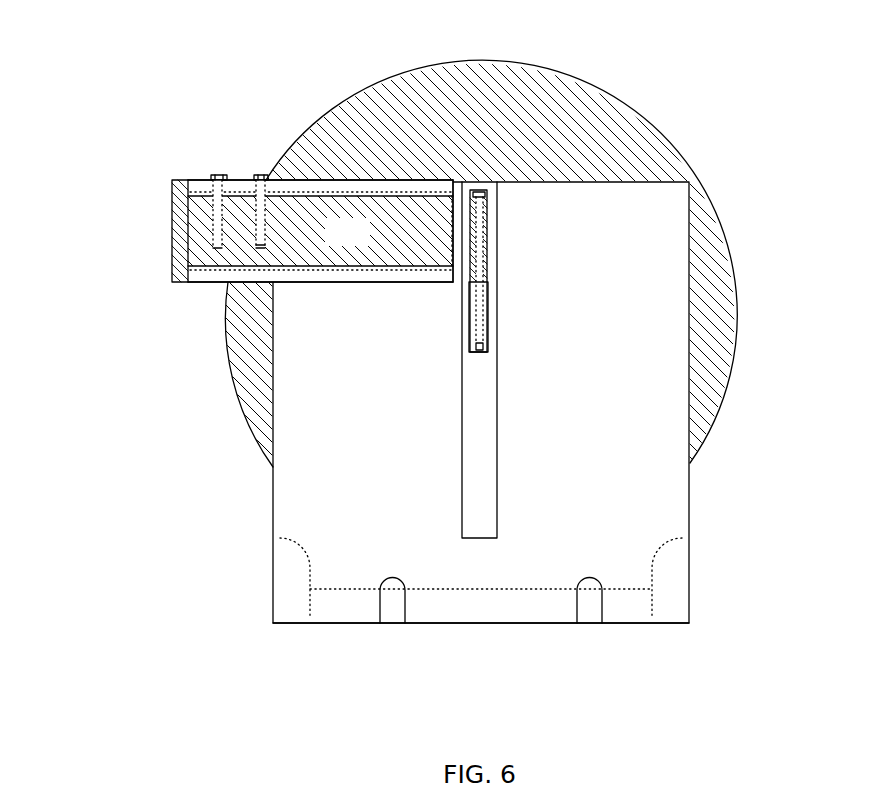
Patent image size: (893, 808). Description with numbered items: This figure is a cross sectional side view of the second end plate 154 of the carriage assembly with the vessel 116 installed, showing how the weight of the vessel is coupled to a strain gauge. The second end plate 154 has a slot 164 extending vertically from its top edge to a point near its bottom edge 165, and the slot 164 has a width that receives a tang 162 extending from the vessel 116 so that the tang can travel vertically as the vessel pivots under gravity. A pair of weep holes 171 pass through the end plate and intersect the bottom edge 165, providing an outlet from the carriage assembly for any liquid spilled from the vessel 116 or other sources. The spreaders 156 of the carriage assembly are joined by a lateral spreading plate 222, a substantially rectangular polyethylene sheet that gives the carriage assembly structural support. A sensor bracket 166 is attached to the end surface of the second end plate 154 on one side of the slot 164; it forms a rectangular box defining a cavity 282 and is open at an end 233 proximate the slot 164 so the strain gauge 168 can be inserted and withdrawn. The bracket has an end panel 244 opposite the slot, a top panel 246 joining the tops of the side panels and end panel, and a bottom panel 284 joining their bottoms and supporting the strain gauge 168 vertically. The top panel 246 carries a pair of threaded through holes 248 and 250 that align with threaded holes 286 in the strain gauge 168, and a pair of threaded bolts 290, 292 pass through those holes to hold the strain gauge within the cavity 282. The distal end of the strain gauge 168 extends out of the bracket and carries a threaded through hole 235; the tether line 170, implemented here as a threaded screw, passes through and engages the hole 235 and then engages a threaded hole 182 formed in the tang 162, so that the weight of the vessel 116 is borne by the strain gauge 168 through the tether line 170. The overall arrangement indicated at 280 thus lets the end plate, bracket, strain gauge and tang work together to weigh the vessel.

The vessel 116 is at (477, 62).
The mounting assembly 280 is at (753, 148).
The sensor bracket 166 is at (137, 178).
The threaded bolt 292 is at (260, 175).
The threaded bolt 290 is at (177, 174).
The threaded through hole 248 is at (211, 185).
The top panel 246 is at (360, 193).
The cavity 282 is at (447, 213).
The threaded through hole 250 is at (263, 192).
The threaded through hole 235 is at (483, 215).
The end panel 244 is at (180, 248).
The strain gauge 168 is at (365, 242).
The tether line 170 is at (531, 268).
The bottom panel 284 is at (218, 252).
The tang 162 is at (487, 305).
The threaded hole 286 is at (262, 253).
The open end 233 is at (453, 248).
The threaded hole 182 is at (480, 342).
The second end plate 154 is at (650, 385).
The slot 164 is at (480, 476).
The spreader 156 is at (310, 565).
The lateral spreading plate 222 is at (513, 589).
The weep hole 171 is at (393, 593).
The bottom edge 165 is at (623, 625).